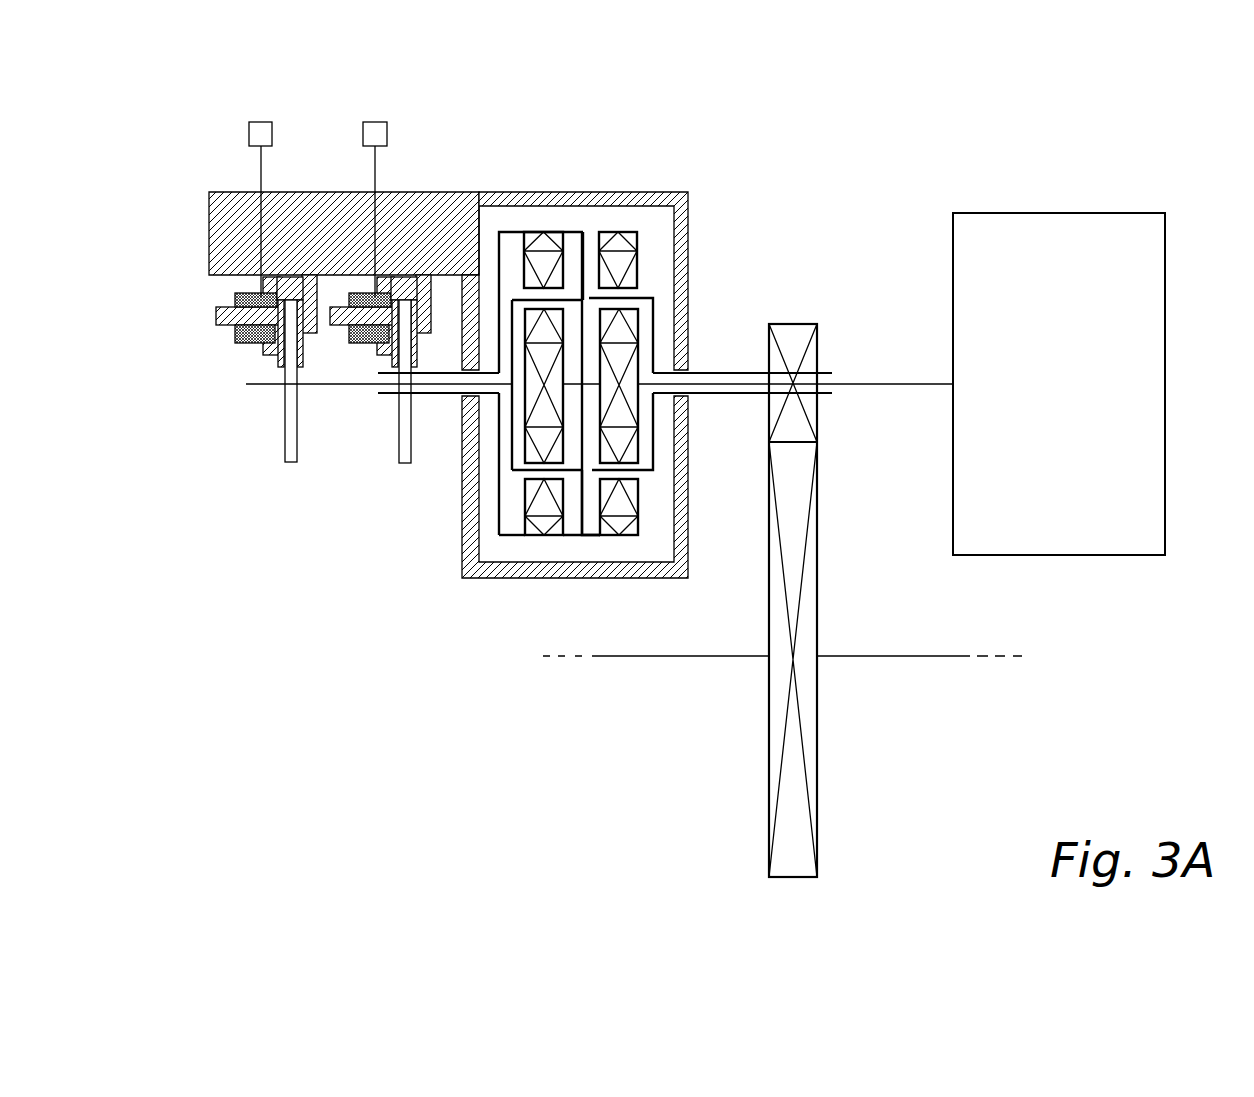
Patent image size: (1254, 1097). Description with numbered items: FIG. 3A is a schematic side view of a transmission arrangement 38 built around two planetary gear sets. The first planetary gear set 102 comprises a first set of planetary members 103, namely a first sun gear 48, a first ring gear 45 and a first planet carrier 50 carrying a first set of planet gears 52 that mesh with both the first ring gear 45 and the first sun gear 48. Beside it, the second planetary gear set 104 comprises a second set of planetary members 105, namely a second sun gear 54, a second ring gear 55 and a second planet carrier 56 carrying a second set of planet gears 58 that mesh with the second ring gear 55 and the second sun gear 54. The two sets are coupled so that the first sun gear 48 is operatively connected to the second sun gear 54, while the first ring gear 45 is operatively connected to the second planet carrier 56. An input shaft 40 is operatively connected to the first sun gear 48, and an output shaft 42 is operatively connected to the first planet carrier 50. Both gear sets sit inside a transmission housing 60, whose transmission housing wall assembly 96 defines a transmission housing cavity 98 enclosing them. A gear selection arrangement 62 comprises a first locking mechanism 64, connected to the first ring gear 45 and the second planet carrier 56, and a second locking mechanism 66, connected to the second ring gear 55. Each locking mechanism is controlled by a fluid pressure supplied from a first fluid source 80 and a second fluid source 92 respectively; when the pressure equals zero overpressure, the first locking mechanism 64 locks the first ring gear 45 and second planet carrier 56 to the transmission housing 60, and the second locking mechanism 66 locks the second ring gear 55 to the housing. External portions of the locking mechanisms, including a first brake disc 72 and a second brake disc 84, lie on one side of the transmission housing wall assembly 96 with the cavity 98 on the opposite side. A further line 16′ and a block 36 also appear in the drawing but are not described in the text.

The drive shaft portion 16′ is at (662, 657).
The drive unit 36 is at (1098, 525).
The transmission arrangement 38 is at (423, 574).
The input shaft 40 is at (862, 382).
The output shaft 42 is at (745, 398).
The first ring gear 45 is at (617, 537).
The first sun gear 48 is at (618, 358).
The first planet carrier 50 is at (643, 472).
The first set of planet gears 52 is at (640, 497).
The second sun gear 54 is at (542, 417).
The second ring gear 55 is at (527, 495).
The second planet carrier 56 is at (517, 302).
The second set of planet gears 58 is at (542, 523).
The transmission housing 60 is at (232, 192).
The gear selection arrangement 62 is at (205, 375).
The first locking mechanism 64 is at (323, 287).
The second locking mechanism 66 is at (438, 287).
The first brake disc 72 is at (283, 432).
The first fluid source 80 is at (262, 122).
The second brake disc 84 is at (398, 440).
The second fluid source 92 is at (376, 122).
The transmission housing wall assembly 96 is at (510, 578).
The transmission housing cavity 98 is at (587, 547).
The first planetary gear set 102 is at (647, 218).
The first set of planetary members 103 is at (649, 275).
The second planetary gear set 104 is at (559, 223).
The second set of planetary members 105 is at (576, 236).